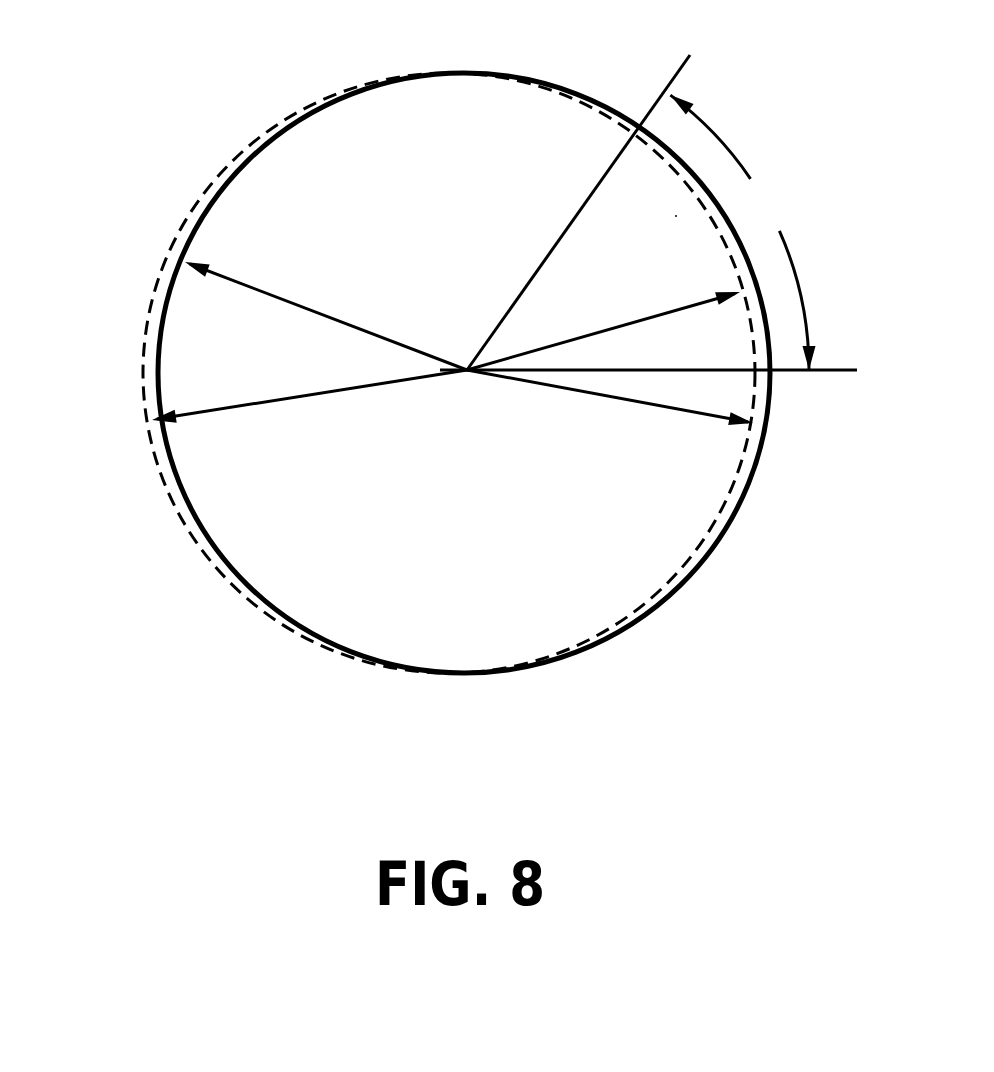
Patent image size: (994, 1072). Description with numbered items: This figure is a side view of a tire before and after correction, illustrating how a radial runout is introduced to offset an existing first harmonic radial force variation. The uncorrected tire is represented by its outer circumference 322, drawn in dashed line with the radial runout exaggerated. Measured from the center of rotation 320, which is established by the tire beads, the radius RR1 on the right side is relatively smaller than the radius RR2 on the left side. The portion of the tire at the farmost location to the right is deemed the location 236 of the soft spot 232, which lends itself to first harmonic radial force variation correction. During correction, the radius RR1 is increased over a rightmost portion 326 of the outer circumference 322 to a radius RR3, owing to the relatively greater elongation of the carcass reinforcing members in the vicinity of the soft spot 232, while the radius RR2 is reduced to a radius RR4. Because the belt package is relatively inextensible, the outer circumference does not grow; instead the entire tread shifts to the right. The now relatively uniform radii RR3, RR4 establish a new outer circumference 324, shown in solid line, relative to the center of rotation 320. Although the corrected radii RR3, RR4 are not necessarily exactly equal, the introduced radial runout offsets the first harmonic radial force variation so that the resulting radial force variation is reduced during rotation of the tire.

The center of rotation 320 is at (468, 380).
The outer circumference 322 is at (185, 190).
The new outer circumference 324 is at (726, 550).
The rightmost portion 326 is at (684, 205).
The soft spot 232 is at (768, 380).
The location of the soft spot 236 is at (648, 212).
The radius RR1 is at (568, 341).
The radius RR2 is at (202, 412).
The radius RR3 is at (628, 400).
The radius RR4 is at (272, 297).